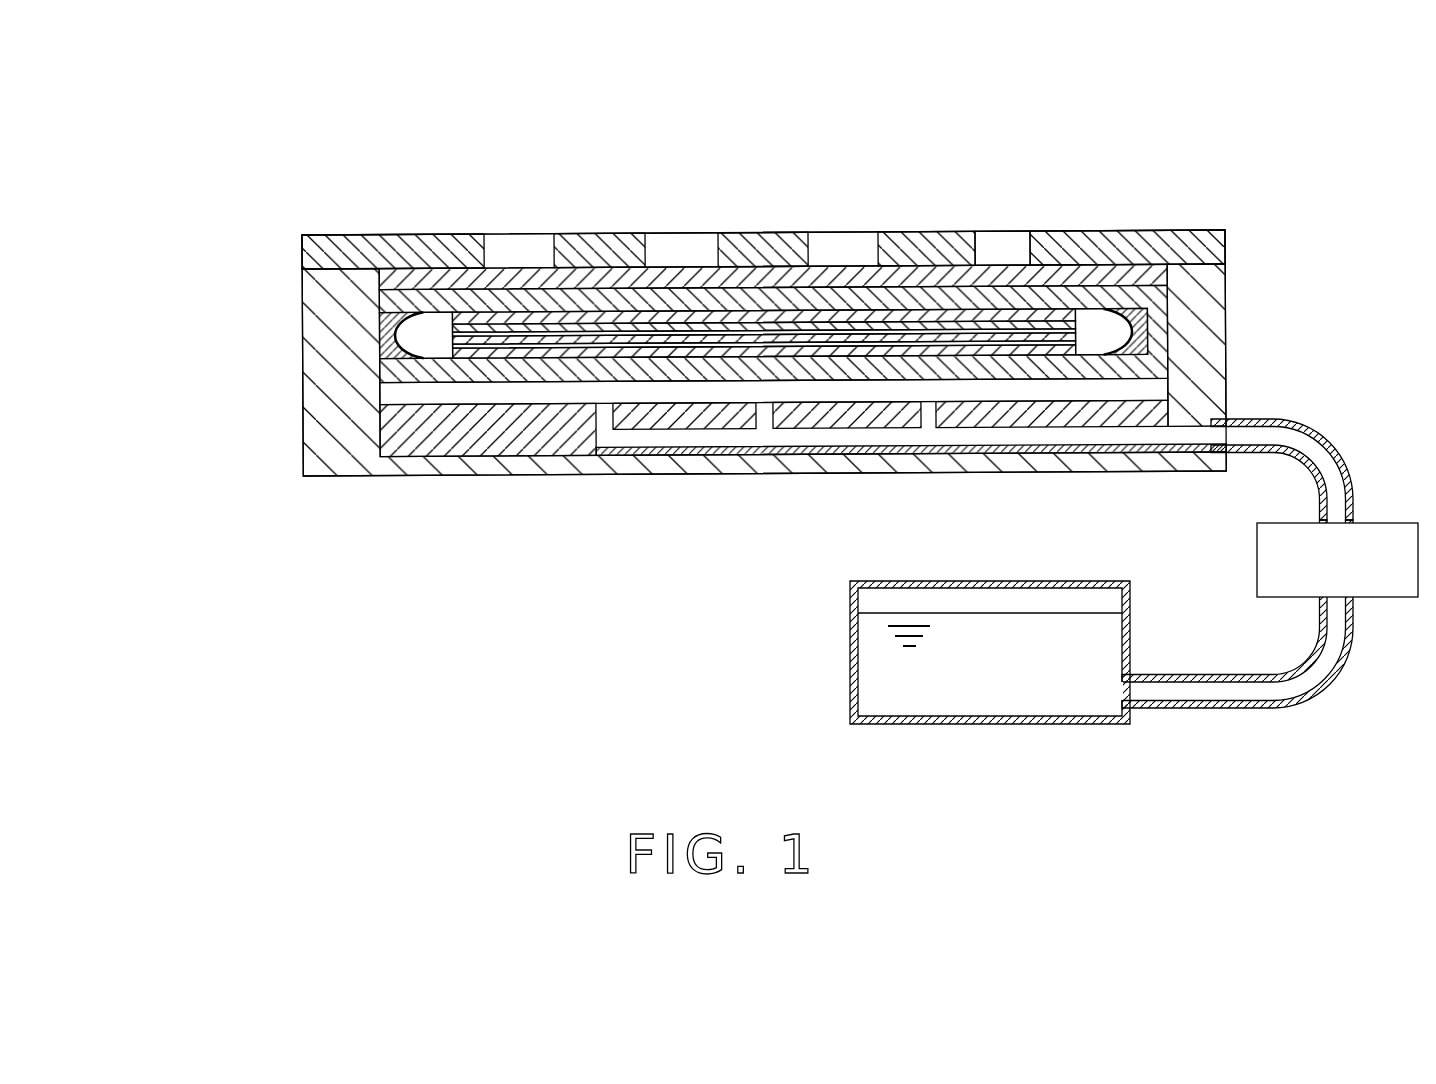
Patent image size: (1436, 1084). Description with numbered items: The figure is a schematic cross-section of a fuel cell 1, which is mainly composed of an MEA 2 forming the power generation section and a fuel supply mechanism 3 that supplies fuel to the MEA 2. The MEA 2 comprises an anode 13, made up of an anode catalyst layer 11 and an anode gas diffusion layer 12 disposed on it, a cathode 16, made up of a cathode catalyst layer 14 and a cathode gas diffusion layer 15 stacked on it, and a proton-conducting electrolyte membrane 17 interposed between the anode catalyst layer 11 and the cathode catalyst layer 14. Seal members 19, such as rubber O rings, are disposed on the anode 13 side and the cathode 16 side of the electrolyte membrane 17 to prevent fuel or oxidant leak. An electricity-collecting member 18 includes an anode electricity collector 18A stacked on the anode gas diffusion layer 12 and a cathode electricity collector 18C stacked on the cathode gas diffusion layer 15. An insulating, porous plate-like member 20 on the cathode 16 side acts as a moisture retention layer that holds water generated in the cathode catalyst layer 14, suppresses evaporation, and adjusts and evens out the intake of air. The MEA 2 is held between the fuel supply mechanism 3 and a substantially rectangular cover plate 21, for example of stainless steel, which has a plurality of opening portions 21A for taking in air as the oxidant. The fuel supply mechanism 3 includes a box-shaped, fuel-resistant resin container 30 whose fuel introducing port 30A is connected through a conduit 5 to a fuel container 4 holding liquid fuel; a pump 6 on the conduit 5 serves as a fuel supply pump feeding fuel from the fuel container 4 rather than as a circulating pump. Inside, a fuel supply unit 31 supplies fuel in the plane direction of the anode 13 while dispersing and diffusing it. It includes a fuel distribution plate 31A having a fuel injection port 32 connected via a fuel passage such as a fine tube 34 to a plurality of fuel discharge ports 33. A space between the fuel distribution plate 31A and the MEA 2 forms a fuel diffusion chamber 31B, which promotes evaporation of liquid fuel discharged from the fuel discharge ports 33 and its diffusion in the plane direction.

The fuel cell 1 is at (779, 417).
The MEA 2 is at (715, 321).
The fuel supply mechanism 3 is at (803, 497).
The fuel container 4 is at (850, 644).
The conduit 5 is at (1254, 563).
The pump 6 is at (1405, 523).
The anode catalyst layer 11 is at (452, 349).
The anode gas diffusion layer 12 is at (452, 359).
The anode 13 is at (634, 376).
The cathode catalyst layer 14 is at (452, 329).
The cathode gas diffusion layer 15 is at (452, 318).
The cathode 16 is at (633, 279).
The electrolyte membrane 17 is at (398, 336).
The electricity-collecting member 18 is at (1140, 376).
The anode electricity collector 18A is at (690, 384).
The cathode electricity collector 18C is at (765, 313).
The seal member 19 is at (1147, 325).
The plate-like member 20 is at (1147, 284).
The cover plate 21 is at (790, 223).
The opening portion 21A is at (1033, 245).
The container 30 is at (356, 478).
The fuel introducing port 30A is at (1202, 433).
The fuel supply unit 31 is at (774, 497).
The fuel distribution plate 31A is at (482, 438).
The fuel diffusion chamber 31B is at (549, 398).
The fuel injection port 32 is at (1157, 445).
The fuel discharge ports 33 is at (604, 424).
The fine tube 34 is at (1030, 446).